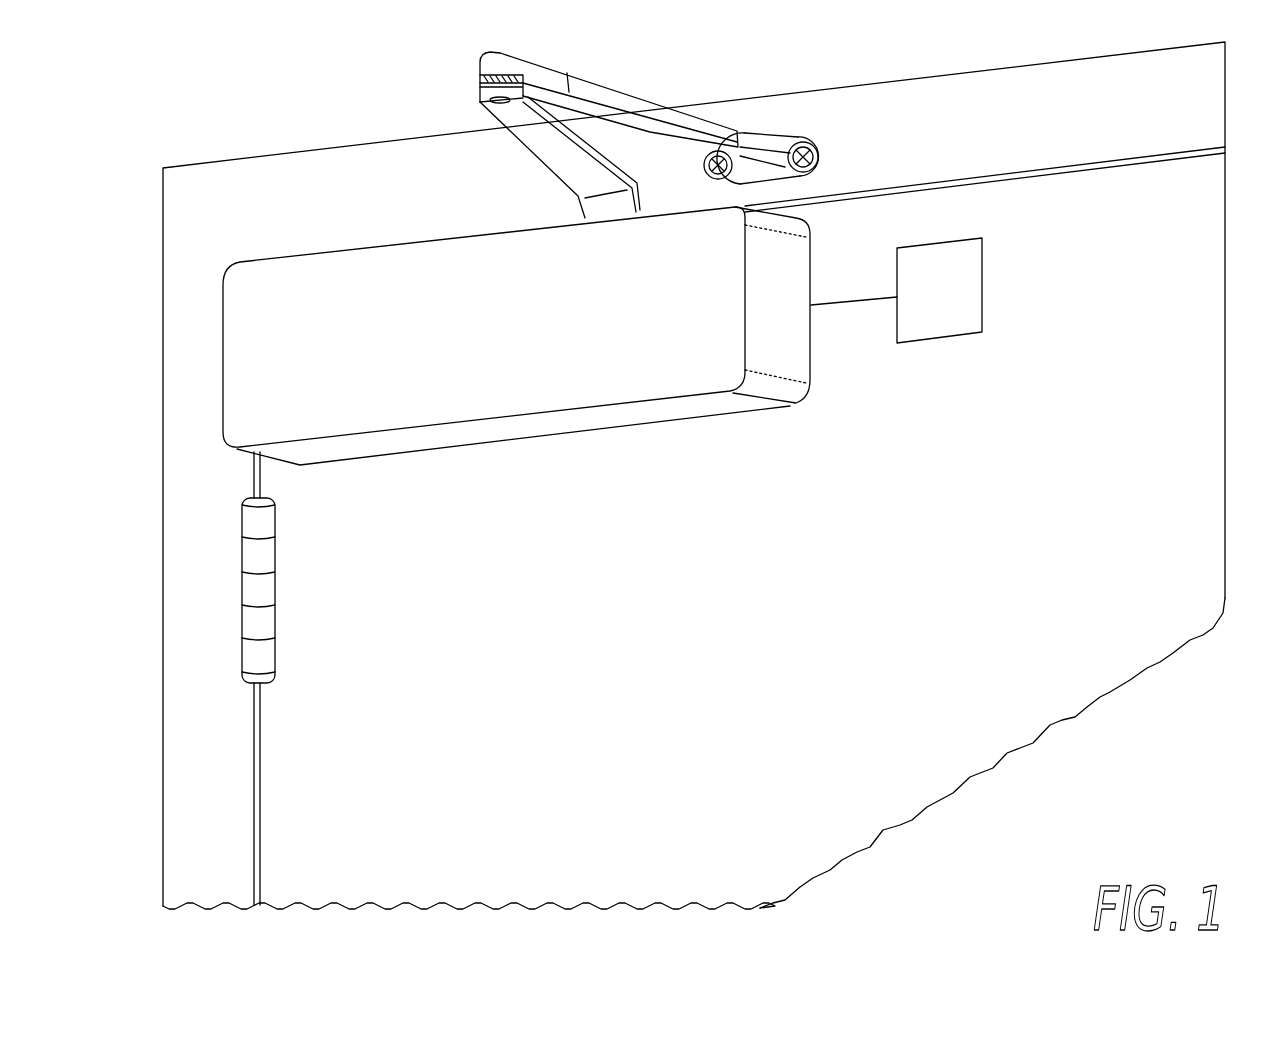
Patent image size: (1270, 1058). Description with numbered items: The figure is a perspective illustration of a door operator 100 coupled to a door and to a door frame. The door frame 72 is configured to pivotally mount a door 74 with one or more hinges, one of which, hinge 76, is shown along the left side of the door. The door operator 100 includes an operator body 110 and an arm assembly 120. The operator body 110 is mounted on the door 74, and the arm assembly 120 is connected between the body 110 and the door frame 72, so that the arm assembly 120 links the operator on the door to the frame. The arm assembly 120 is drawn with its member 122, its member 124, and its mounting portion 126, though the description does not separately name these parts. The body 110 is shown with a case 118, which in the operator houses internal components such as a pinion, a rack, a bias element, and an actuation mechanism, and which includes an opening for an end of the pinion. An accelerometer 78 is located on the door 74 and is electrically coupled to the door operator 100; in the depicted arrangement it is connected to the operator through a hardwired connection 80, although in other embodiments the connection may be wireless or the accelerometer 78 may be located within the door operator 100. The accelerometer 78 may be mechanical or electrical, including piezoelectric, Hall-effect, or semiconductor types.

The door frame 72 is at (175, 495).
The door 74 is at (297, 787).
The hinge 76 is at (263, 660).
The accelerometer 78 is at (985, 287).
The hardwired connection 80 is at (858, 307).
The door operator 100 is at (377, 179).
The operator body 110 is at (516, 406).
The case 118 is at (690, 413).
The arm assembly 120 is at (635, 115).
The lower arm 122 is at (540, 162).
The upper arm 124 is at (612, 95).
The mounting plate with screws 126 is at (837, 155).